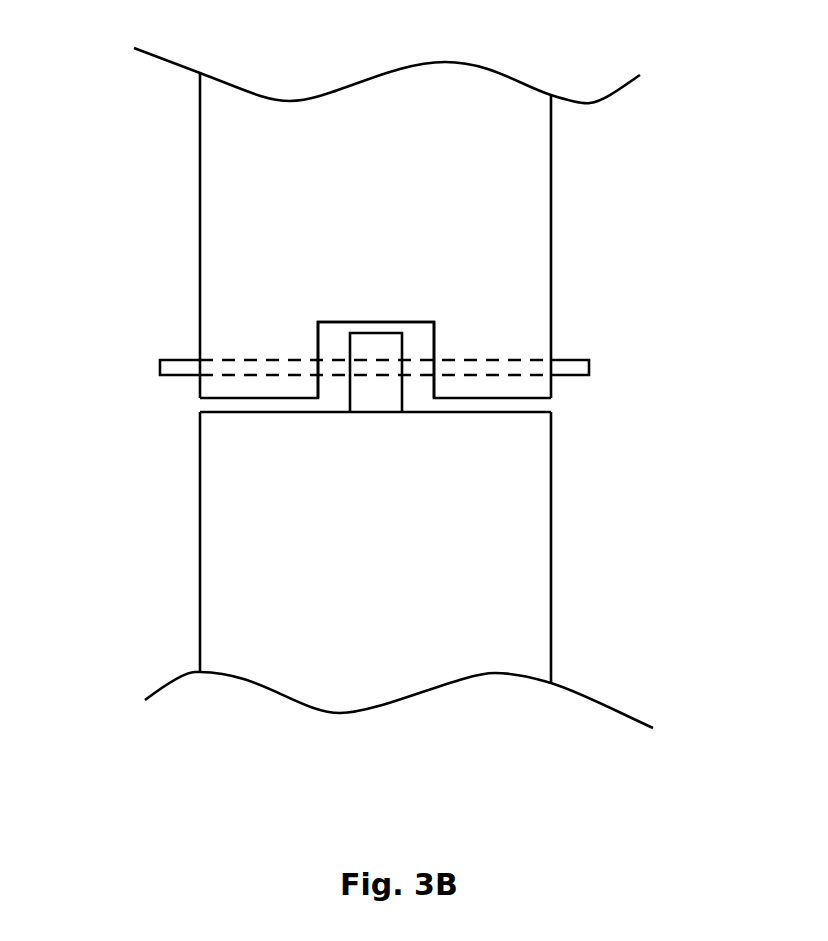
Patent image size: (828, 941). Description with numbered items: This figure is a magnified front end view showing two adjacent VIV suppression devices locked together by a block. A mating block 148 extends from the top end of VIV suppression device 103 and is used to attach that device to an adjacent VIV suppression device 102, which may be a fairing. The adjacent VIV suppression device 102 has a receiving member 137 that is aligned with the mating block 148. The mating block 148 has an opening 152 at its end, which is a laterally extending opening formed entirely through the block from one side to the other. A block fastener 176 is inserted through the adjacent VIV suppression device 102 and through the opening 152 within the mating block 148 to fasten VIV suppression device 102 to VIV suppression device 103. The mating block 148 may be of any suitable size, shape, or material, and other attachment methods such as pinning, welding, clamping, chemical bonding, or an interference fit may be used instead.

The VIV suppression device 102 is at (198, 202).
The VIV suppression device 103 is at (198, 567).
The receiving member 137 is at (436, 336).
The mating block 148 is at (383, 333).
The opening 152 is at (380, 376).
The block fastener 176 is at (590, 375).